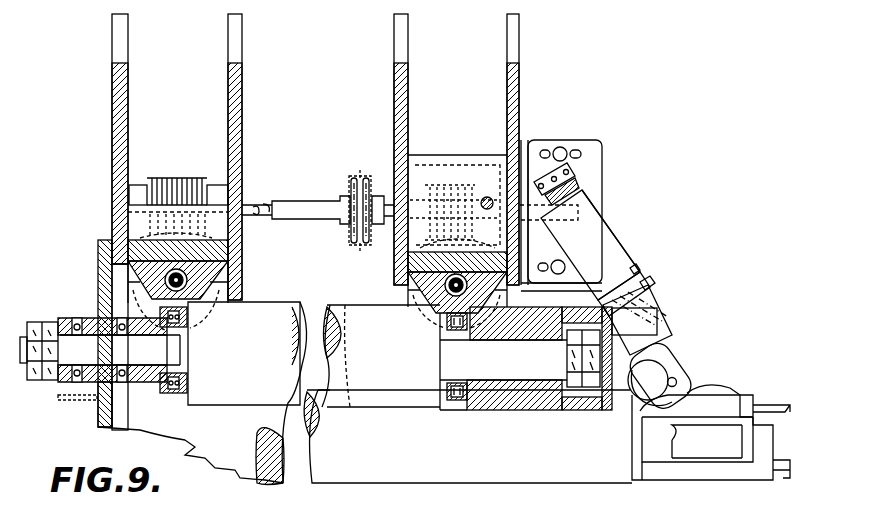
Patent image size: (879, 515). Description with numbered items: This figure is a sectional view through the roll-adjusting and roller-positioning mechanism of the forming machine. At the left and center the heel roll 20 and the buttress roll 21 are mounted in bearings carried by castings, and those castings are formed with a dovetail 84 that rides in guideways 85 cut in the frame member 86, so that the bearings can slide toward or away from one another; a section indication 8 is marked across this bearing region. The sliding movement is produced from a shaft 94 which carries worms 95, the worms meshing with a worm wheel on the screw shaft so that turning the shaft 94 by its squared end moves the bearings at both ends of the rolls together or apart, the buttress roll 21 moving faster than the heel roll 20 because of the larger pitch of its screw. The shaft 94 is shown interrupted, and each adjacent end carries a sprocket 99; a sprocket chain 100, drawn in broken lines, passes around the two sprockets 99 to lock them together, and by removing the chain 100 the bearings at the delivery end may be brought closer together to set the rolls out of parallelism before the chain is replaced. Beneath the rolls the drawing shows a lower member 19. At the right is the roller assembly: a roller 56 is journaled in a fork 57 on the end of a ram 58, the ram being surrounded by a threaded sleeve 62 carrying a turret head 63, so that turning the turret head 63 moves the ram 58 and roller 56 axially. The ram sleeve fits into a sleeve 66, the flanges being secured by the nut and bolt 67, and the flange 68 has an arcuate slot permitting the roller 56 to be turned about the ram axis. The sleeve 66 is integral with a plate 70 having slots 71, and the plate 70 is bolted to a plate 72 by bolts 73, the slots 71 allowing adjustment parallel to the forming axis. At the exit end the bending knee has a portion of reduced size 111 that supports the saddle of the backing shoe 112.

The section line 8- 8 is at (177, 178).
The base 19 is at (583, 484).
The heel roll 20 is at (360, 306).
The buttress roll 21 is at (655, 306).
The roller 56 is at (641, 412).
The fork 57 is at (668, 361).
The ram 58 is at (660, 332).
The threaded sleeve 62 is at (582, 188).
The turret head 63 is at (578, 176).
The sleeve 66 is at (612, 232).
The nut and bolt 67 is at (628, 262).
The flange 68 is at (645, 274).
The plate 70 is at (603, 160).
The slots 71 is at (580, 151).
The plate 72 is at (523, 140).
The bolts 73 is at (564, 149).
The dovetail 84 is at (236, 278).
The guideways 85 is at (230, 240).
The frame member 86 is at (132, 244).
The shaft 94 is at (320, 200).
The worms 95 is at (185, 183).
The sprocket 99 is at (351, 243).
The sprocket chain 100 is at (365, 176).
The portion of reduced size 111 is at (735, 478).
The backing shoe 112 is at (711, 437).